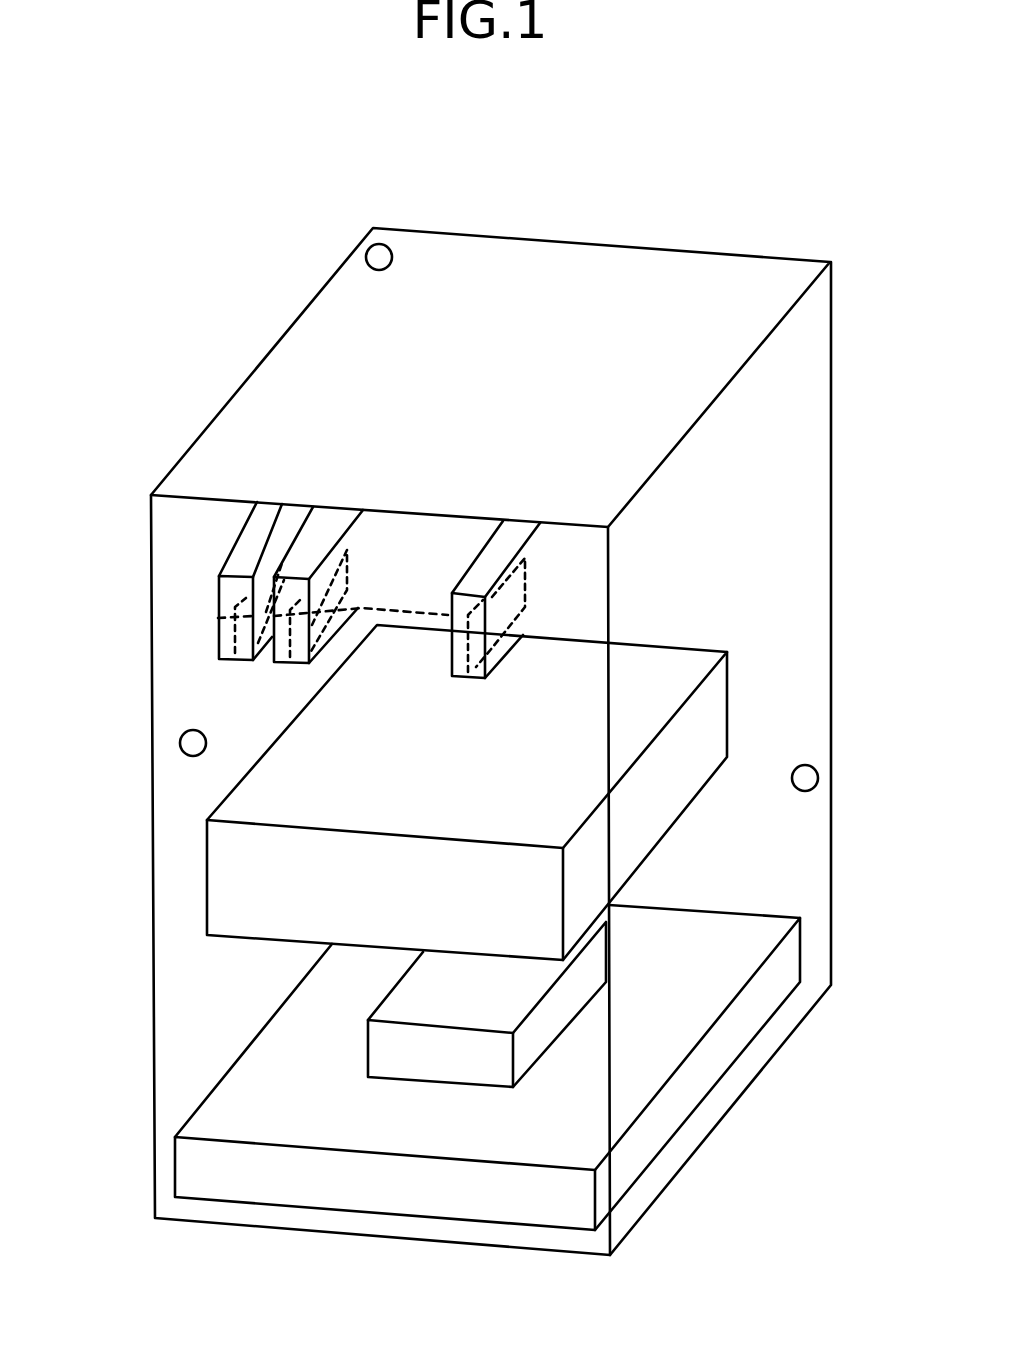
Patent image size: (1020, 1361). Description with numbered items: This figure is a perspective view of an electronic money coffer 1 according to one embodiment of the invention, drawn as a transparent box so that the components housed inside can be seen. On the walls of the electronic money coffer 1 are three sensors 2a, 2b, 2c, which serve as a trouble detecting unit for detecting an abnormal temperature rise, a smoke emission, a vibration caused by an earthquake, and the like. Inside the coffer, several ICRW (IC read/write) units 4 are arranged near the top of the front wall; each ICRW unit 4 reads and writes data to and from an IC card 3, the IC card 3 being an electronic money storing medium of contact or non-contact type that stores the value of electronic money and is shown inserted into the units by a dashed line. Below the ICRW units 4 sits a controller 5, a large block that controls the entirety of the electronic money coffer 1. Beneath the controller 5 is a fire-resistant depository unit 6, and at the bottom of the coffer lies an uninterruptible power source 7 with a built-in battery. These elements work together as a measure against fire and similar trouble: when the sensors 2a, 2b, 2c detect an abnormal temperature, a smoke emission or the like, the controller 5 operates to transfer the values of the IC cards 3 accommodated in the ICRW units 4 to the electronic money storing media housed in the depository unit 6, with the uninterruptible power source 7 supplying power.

The electronic money coffer 1 is at (592, 242).
The sensor 2a is at (366, 258).
The sensor 2b is at (180, 743).
The sensor 2c is at (818, 778).
The IC card 3 is at (218, 618).
The ICRW unit 4 is at (258, 537).
The controller 5 is at (667, 660).
The fire-resistant depository unit 6 is at (410, 997).
The uninterruptible power source 7 is at (225, 1112).